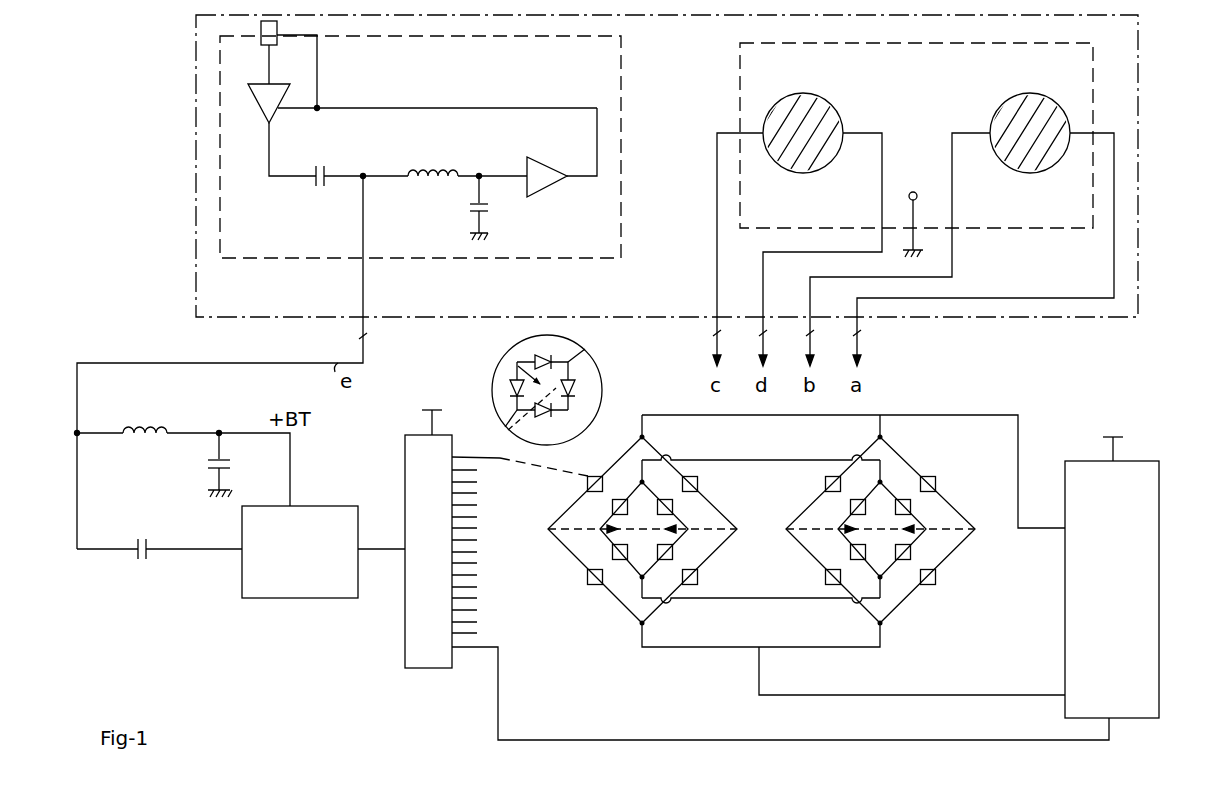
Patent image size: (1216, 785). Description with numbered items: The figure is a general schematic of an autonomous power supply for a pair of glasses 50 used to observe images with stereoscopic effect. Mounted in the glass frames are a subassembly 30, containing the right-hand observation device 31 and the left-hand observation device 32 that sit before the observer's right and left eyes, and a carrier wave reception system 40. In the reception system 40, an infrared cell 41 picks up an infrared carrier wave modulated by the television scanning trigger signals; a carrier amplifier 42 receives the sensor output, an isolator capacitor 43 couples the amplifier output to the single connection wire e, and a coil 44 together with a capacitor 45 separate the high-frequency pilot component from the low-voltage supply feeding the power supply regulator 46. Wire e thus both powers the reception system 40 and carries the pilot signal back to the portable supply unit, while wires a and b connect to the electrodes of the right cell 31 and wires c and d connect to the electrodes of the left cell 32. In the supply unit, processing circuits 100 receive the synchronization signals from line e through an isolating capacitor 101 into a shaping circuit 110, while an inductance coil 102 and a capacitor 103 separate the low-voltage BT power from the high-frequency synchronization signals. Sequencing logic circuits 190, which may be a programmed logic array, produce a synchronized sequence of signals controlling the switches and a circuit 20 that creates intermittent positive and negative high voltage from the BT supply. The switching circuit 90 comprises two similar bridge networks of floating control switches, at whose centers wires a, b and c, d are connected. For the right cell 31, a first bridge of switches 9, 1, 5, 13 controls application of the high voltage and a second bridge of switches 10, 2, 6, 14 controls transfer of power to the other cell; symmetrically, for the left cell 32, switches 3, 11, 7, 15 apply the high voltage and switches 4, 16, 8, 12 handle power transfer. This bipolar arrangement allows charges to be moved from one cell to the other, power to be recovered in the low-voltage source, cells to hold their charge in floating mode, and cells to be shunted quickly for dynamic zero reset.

The floating control switch 1 is at (930, 476).
The floating control switch 2 is at (905, 499).
The floating control switch 3 is at (604, 388).
The floating control switch 4 is at (624, 499).
The floating control switch 5 is at (826, 577).
The floating control switch 6 is at (850, 552).
The floating control switch 7 is at (682, 577).
The floating control switch 8 is at (674, 552).
The floating control switch 9 is at (826, 484).
The floating control switch 10 is at (860, 499).
The floating control switch 11 is at (699, 484).
The floating control switch 12 is at (674, 507).
The floating control switch 13 is at (930, 586).
The floating control switch 14 is at (911, 552).
The floating control switch 15 is at (600, 586).
The floating control switch 16 is at (612, 552).
The intermittent high-voltage circuit 20 is at (1168, 583).
The observation subassembly 30 is at (736, 90).
The right-hand observation device 31 is at (1000, 113).
The left-hand observation device 32 is at (836, 116).
The carrier wave reception system 40 is at (624, 148).
The infrared cell 41 is at (262, 48).
The carrier amplifier 42 is at (270, 118).
The isolator capacitor 43 is at (332, 170).
The coil 44 is at (460, 152).
The capacitor 45 is at (471, 212).
The power supply regulator 46 is at (545, 170).
The pair of glasses 50 is at (190, 272).
The switching circuit 90 is at (700, 664).
The processing circuits 100 is at (386, 552).
The isolating capacitor 101 is at (150, 560).
The inductance coil 102 is at (160, 430).
The capacitor 103 is at (208, 470).
The shaping circuit 110 is at (276, 600).
The sequencing logic circuits 190 is at (440, 670).